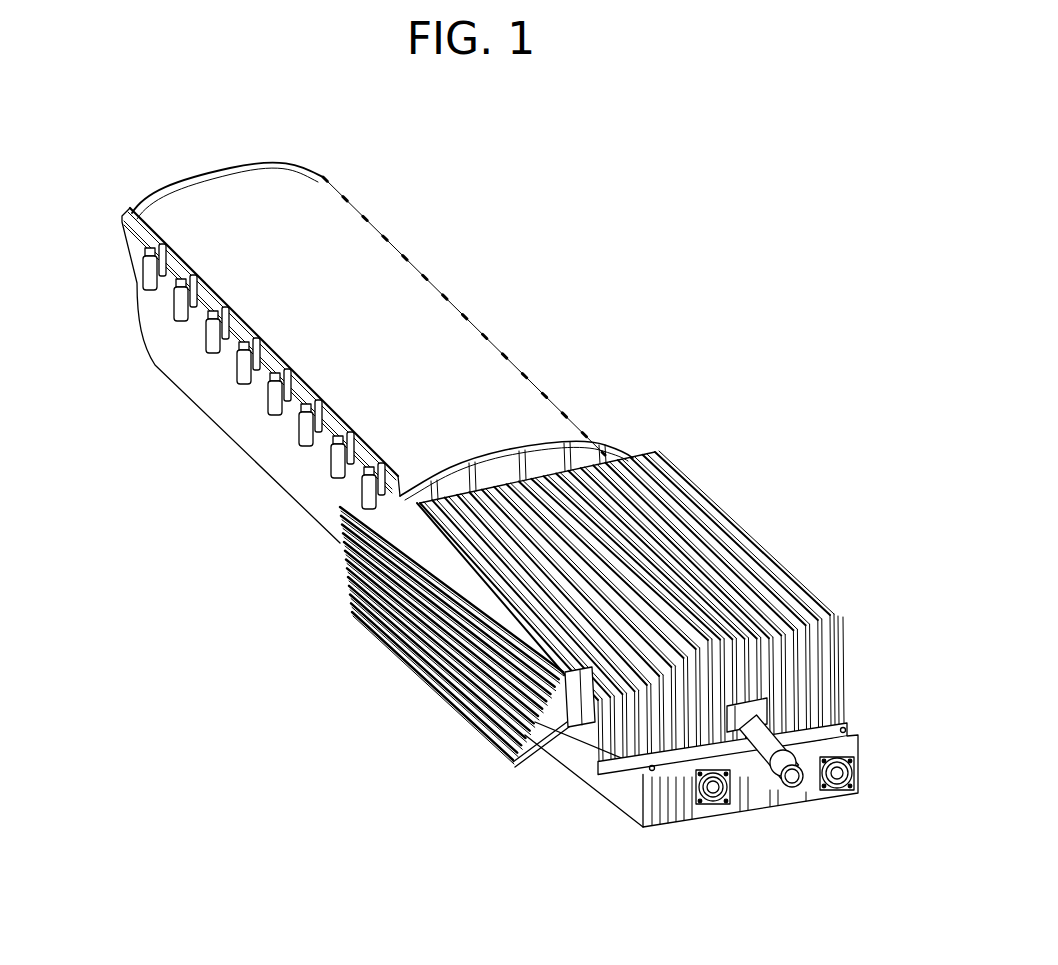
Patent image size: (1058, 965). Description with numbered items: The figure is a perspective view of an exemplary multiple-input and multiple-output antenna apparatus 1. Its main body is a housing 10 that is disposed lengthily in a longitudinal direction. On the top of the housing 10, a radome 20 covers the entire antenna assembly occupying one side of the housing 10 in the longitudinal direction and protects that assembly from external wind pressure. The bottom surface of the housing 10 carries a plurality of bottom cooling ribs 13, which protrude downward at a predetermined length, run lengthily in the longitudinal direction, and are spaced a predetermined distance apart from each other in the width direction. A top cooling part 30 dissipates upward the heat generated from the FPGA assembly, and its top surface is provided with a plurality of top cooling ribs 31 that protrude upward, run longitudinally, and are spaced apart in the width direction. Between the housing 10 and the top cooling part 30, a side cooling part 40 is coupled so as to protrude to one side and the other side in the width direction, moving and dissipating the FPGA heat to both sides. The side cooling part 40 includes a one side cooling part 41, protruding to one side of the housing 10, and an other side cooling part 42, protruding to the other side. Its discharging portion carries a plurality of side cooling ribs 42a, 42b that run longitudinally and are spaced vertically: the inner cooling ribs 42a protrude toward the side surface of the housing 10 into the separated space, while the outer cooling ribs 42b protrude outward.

The multiple-input and multiple-output antenna apparatus 1 is at (158, 407).
The housing 10 is at (238, 440).
The bottom cooling ribs 13 is at (660, 830).
The radome 20 is at (392, 265).
The top cooling part 30 is at (623, 488).
The top cooling ribs 31 is at (655, 517).
The side cooling part 40 is at (565, 614).
The one side cooling part 41 is at (388, 672).
The other side cooling part 42 is at (743, 526).
The inner cooling ribs 42a is at (545, 750).
The outer cooling ribs 42b is at (510, 754).